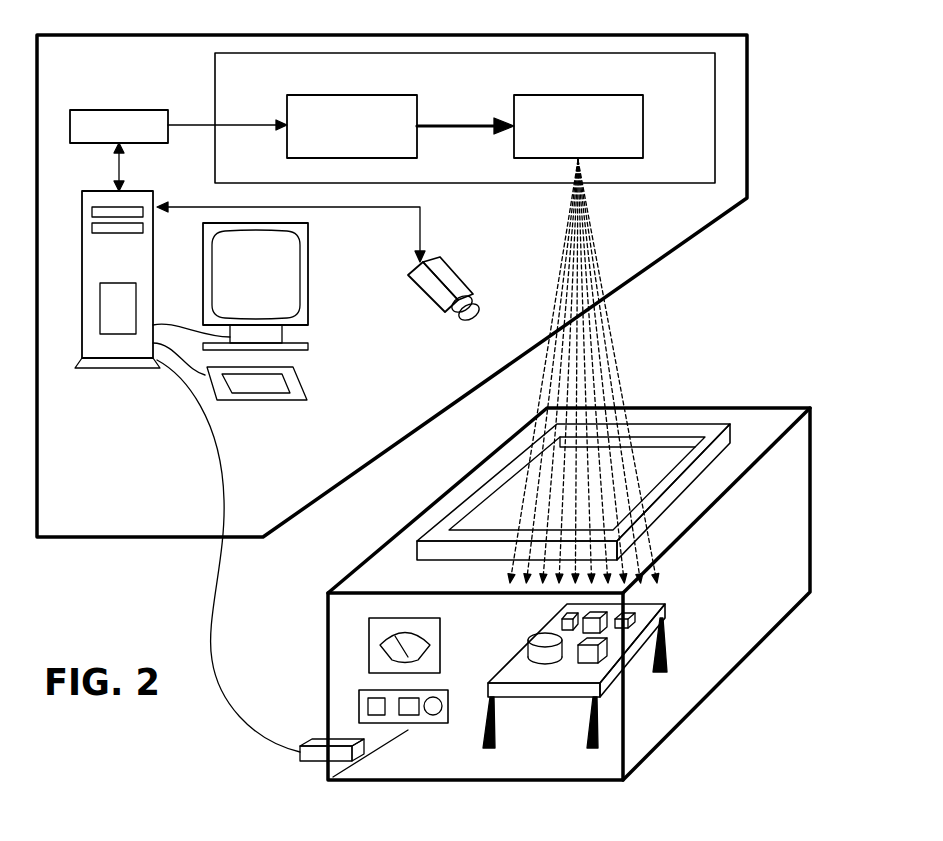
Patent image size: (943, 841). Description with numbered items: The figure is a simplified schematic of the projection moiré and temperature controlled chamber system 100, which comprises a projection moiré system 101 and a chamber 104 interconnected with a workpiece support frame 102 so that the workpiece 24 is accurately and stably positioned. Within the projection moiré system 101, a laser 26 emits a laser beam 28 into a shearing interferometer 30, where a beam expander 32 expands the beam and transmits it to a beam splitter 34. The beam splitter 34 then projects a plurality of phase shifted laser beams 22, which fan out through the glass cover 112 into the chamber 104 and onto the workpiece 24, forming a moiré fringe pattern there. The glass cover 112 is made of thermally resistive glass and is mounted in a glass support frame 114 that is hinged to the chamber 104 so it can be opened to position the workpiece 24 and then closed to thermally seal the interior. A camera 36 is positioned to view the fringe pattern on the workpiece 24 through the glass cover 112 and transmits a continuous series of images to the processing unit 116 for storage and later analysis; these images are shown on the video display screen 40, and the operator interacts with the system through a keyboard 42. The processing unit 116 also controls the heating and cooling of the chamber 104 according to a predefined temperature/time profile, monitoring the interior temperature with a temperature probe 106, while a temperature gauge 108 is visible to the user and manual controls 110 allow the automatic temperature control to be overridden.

The phase shifted laser beams 22 is at (624, 249).
The workpiece 24 is at (667, 610).
The laser 26 is at (119, 108).
The laser beam 28 is at (191, 125).
The shearing interferometer 30 is at (696, 169).
The beam expander 32 is at (287, 103).
The beam splitter 34 is at (643, 126).
The camera 36 is at (430, 299).
The video display screen 40 is at (303, 295).
The keyboard 42 is at (307, 392).
The projection moiré and temperature controlled chamber system 100 is at (788, 262).
The projection moiré system 101 is at (281, 512).
The workpiece support frame 102 is at (580, 715).
The chamber 104 is at (697, 708).
The temperature probe 106 is at (300, 758).
The temperature gauge 108 is at (327, 632).
The manual controls 110 is at (327, 698).
The glass cover 112 is at (642, 470).
The glass support frame 114 is at (712, 423).
The processing unit 116 is at (141, 372).